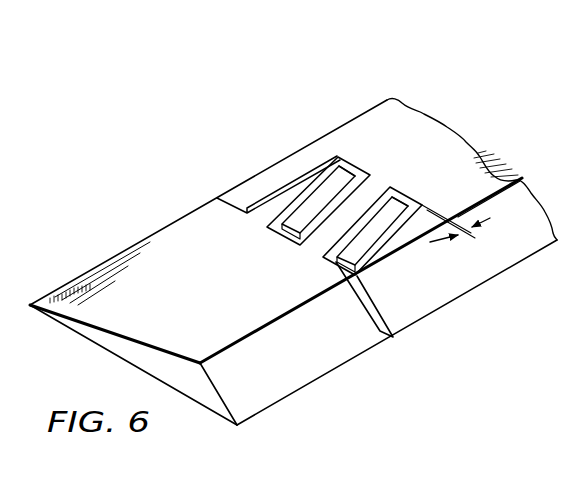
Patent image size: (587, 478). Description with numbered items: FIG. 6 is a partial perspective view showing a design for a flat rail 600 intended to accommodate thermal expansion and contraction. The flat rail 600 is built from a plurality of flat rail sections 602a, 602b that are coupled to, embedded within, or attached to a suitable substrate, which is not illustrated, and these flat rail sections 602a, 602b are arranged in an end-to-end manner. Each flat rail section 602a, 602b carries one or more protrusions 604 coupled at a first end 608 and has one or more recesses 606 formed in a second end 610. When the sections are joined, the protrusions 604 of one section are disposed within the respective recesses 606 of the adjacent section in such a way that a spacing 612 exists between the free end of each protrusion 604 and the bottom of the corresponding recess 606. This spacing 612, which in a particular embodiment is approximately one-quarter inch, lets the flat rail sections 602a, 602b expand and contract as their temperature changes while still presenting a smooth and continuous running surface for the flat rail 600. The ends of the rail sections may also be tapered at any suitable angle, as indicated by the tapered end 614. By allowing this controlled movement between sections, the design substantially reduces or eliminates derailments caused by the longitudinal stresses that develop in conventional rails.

The flat rail 600 is at (191, 82).
The flat rail section 602a is at (300, 377).
The flat rail section 602b is at (443, 293).
The protrusion 604 is at (297, 197).
The recess 606 is at (353, 160).
The first end 608 is at (192, 196).
The second end 610 is at (227, 170).
The spacing 612 is at (476, 237).
The tapered end 614 is at (384, 325).